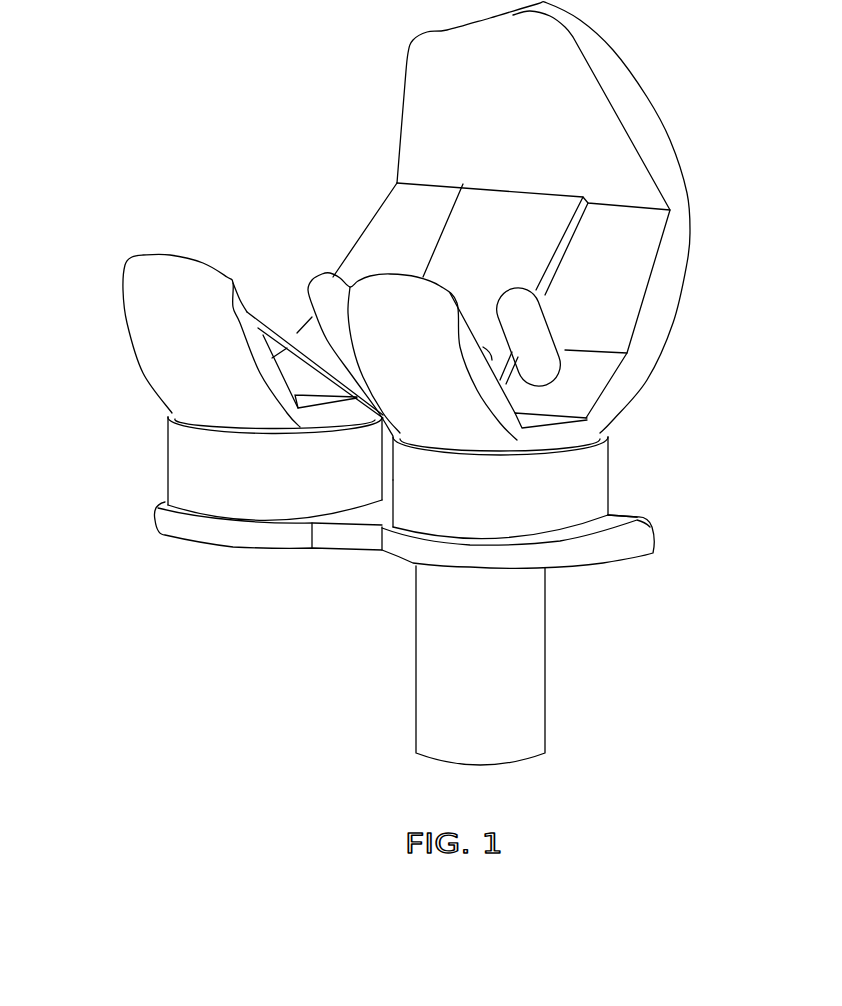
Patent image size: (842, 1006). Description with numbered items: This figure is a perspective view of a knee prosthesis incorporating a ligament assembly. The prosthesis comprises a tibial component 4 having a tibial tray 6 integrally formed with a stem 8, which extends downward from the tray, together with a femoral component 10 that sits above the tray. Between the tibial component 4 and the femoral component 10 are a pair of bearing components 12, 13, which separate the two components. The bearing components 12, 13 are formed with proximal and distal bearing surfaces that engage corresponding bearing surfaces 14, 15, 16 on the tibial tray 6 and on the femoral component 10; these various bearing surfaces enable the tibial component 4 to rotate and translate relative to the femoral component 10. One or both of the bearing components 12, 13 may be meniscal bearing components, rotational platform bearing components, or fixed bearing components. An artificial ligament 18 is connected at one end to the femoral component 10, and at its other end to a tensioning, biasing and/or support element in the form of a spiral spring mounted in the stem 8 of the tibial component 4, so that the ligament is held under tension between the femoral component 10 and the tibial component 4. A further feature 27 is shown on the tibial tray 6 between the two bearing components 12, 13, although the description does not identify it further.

The tibial component 4 is at (597, 563).
The tibial tray 6 is at (248, 538).
The stem 8 is at (533, 713).
The femoral component 10 is at (623, 188).
The bearing component 12 is at (188, 475).
The bearing component 13 is at (590, 475).
The bearing surface 14 is at (632, 523).
The bearing surface 15 is at (143, 310).
The bearing surface 16 is at (377, 297).
The artificial ligament 18 is at (267, 328).
The junction portion 27 is at (387, 482).